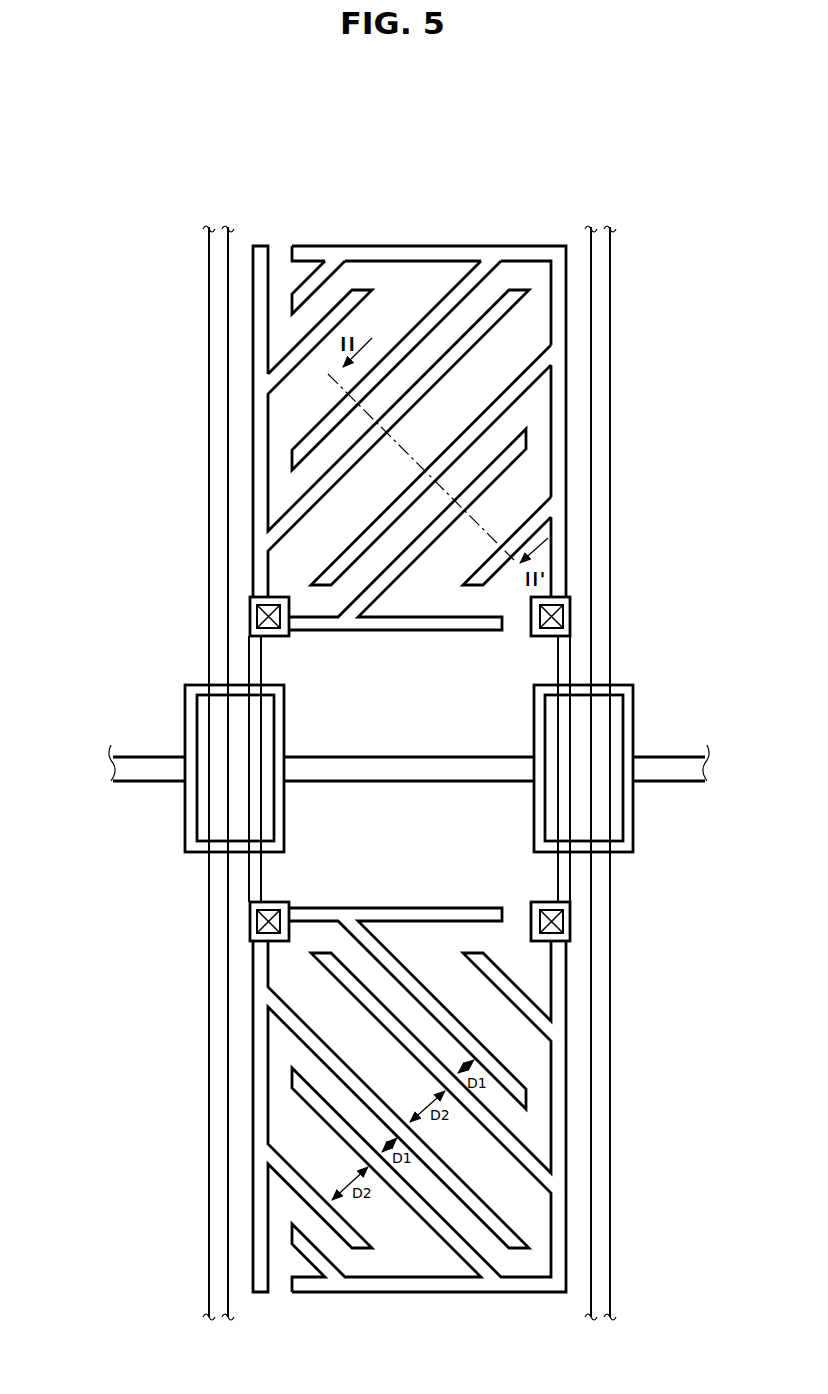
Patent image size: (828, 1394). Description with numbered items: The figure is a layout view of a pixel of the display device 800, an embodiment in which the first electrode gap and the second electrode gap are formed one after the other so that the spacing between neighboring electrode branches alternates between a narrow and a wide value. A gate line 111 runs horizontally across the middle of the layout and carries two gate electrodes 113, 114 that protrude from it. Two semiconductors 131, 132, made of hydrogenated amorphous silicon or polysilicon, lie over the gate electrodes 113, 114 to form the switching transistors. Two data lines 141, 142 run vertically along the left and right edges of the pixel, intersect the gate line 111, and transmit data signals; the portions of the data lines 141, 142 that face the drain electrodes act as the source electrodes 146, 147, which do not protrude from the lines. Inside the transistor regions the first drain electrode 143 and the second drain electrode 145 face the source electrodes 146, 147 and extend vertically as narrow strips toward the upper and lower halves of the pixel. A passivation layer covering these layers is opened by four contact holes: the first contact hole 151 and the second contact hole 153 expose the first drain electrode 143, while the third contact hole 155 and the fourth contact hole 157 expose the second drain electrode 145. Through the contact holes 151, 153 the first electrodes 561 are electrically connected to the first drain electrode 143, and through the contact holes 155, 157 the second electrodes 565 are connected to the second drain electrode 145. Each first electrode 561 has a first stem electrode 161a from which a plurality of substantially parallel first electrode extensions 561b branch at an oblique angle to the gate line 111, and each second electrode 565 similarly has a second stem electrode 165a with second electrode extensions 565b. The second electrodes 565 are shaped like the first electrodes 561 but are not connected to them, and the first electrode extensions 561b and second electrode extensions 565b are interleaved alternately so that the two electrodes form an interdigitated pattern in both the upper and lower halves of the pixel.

The display device 800 is at (140, 165).
The gate line 111 is at (148, 782).
The gate electrode 113 is at (274, 685).
The gate electrode 114 is at (543, 685).
The semiconductor 131 is at (186, 703).
The semiconductor 132 is at (633, 710).
The data line 141 is at (209, 1111).
The data line 142 is at (610, 1111).
The first drain electrode 143 is at (249, 658).
The second drain electrode 145 is at (570, 662).
The source electrode 146 is at (228, 727).
The source electrode 147 is at (588, 727).
The first contact hole 151 is at (257, 613).
The second contact hole 153 is at (257, 917).
The third contact hole 155 is at (563, 615).
The fourth contact hole 157 is at (563, 919).
The first electrode 561 is at (383, 382).
The first stem electrode 161a is at (258, 246).
The first electrode extension 561b is at (322, 312).
The second electrode 565 is at (429, 365).
The second stem electrode 165a is at (522, 246).
The second electrode extension 565b is at (433, 293).